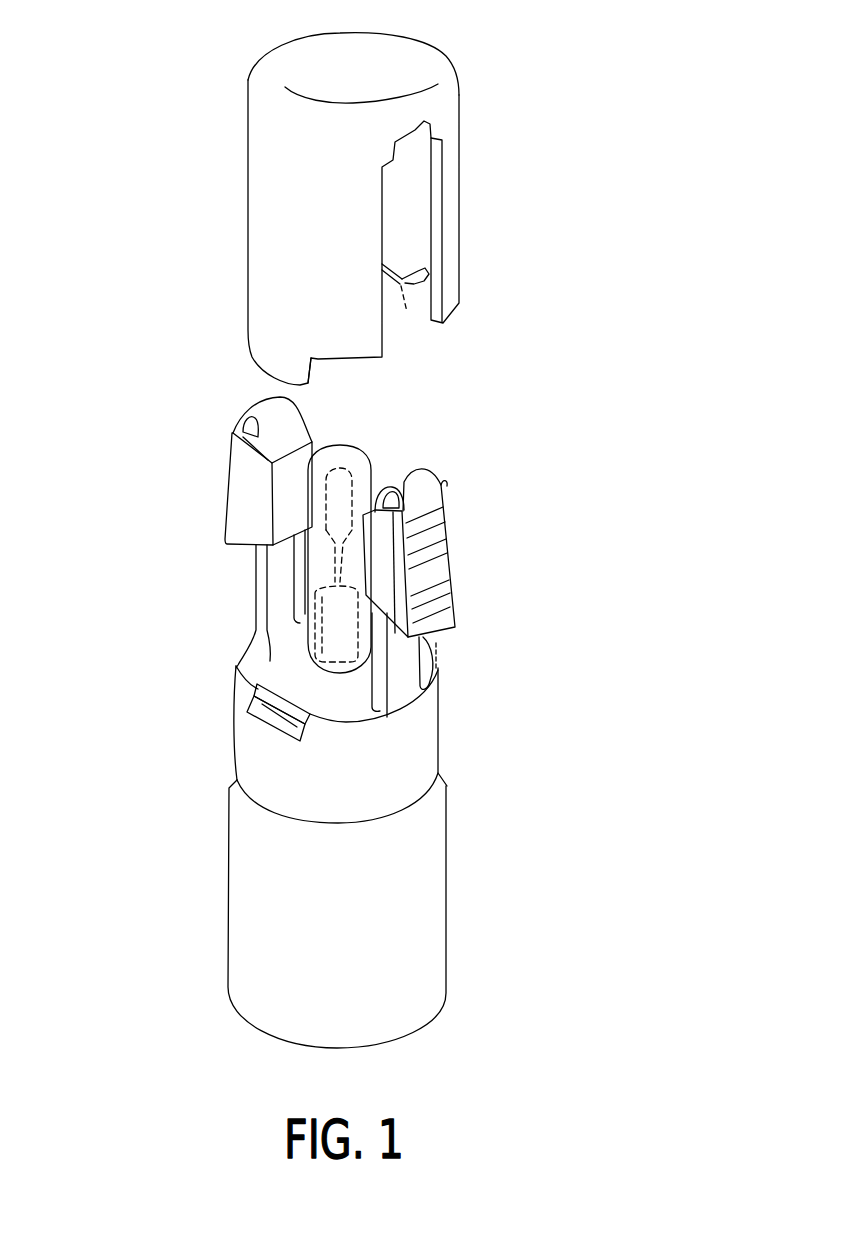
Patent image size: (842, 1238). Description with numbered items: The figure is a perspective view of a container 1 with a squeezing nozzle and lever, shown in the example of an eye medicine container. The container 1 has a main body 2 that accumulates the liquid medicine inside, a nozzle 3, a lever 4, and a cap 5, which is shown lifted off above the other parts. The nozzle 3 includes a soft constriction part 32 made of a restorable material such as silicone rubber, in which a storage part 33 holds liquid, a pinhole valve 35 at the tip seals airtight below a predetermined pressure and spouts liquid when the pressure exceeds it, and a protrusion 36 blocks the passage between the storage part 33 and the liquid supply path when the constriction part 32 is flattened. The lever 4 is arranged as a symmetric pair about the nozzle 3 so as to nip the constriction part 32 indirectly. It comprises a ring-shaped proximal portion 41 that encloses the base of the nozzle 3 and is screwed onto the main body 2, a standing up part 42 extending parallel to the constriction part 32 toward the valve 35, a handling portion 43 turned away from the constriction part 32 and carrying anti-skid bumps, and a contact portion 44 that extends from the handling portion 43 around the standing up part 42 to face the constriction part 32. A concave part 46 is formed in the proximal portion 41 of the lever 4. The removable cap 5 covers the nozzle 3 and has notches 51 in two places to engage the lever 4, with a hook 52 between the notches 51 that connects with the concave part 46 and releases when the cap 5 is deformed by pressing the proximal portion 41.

The container 1 is at (605, 392).
The main body 2 is at (433, 937).
The nozzle 3 is at (278, 654).
The lever 4 is at (461, 670).
The cap 5 is at (422, 63).
The constriction part 32 is at (365, 464).
The storage part 33 is at (308, 553).
The valve 35 is at (360, 450).
The protrusion 36 is at (372, 553).
The proximal portion 41 is at (417, 747).
The standing up part 42 is at (272, 576).
The handling portion 43 is at (242, 433).
The contact portion 44 is at (280, 497).
The concave part 46 is at (272, 723).
The notch 51 is at (442, 210).
The hook 52 is at (203, 343).